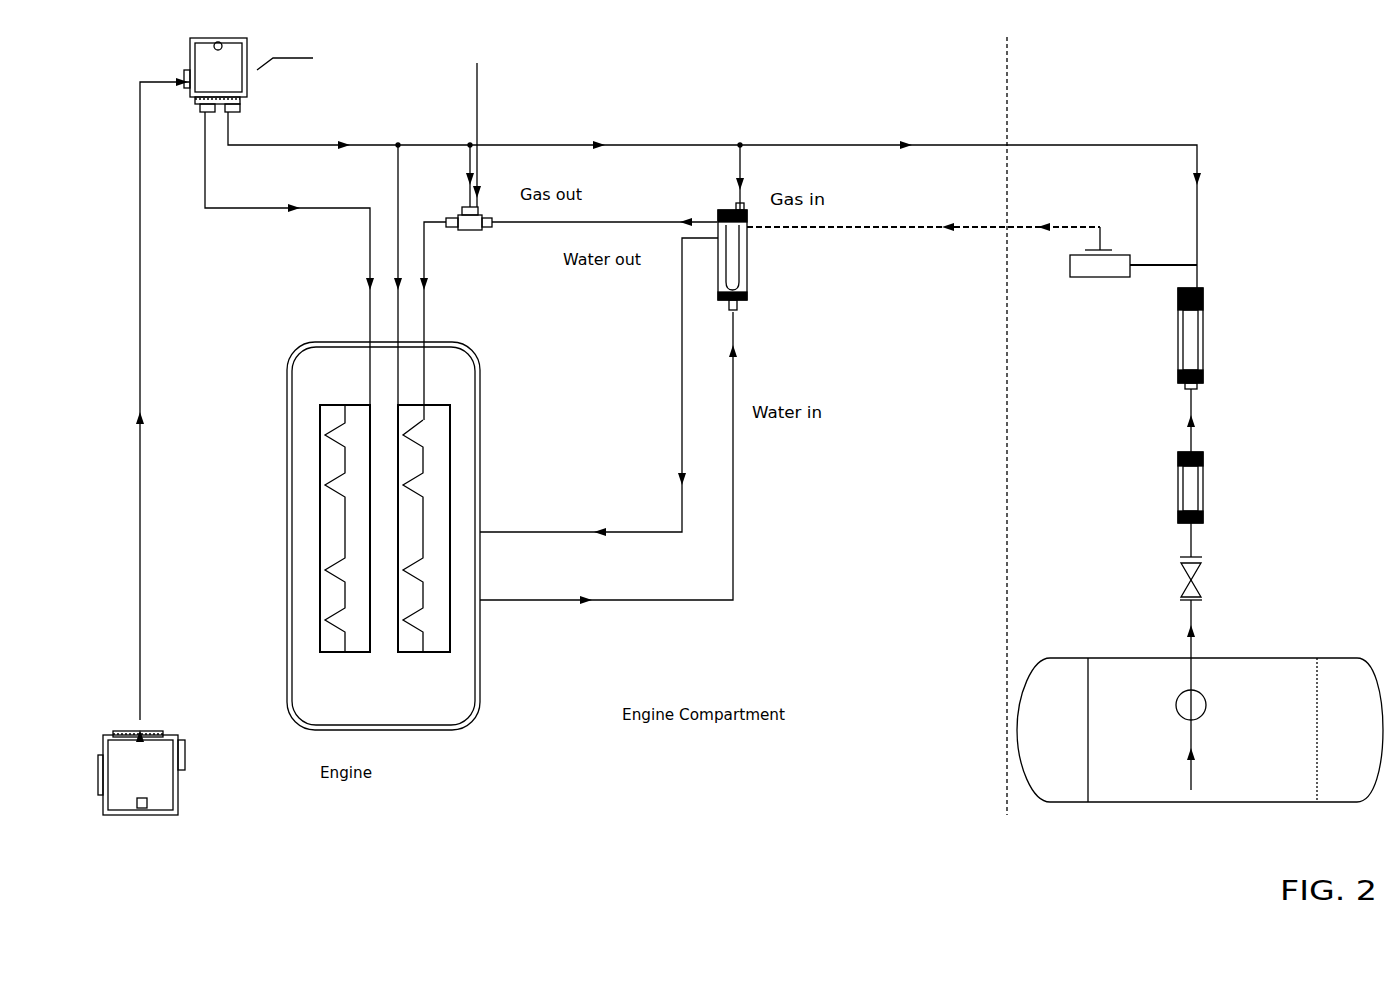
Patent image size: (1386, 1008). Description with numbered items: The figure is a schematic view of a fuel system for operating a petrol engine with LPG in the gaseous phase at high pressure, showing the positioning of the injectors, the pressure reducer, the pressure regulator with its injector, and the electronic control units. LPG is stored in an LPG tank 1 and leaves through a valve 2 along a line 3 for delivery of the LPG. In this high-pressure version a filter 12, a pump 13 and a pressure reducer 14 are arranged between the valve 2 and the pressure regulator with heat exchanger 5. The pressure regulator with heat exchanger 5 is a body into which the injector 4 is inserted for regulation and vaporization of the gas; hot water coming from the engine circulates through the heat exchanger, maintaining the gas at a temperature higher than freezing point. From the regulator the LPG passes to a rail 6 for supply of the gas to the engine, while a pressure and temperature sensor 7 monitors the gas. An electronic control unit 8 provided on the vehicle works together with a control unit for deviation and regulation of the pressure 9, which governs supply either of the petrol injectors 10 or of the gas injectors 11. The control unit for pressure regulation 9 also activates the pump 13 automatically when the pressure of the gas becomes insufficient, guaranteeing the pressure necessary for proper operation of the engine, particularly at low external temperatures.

The LPG tank 1 is at (1201, 701).
The valve 2 is at (1206, 579).
The line for delivery of the LPG 3 is at (1026, 220).
The injector 4 is at (748, 63).
The pressure regulator with heat exchanger 5 is at (741, 318).
The rail 6 is at (434, 511).
The pressure and temperature sensor 7 is at (742, 145).
The electronic control unit 8 is at (242, 809).
The control unit for deviation and regulation of the pressure 9 is at (493, 37).
The petrol injectors 10 is at (177, 297).
The gas injectors 11 is at (505, 475).
The filter 12 is at (1206, 490).
The pump 13 is at (1206, 332).
The pressure reducer 14 is at (1097, 277).